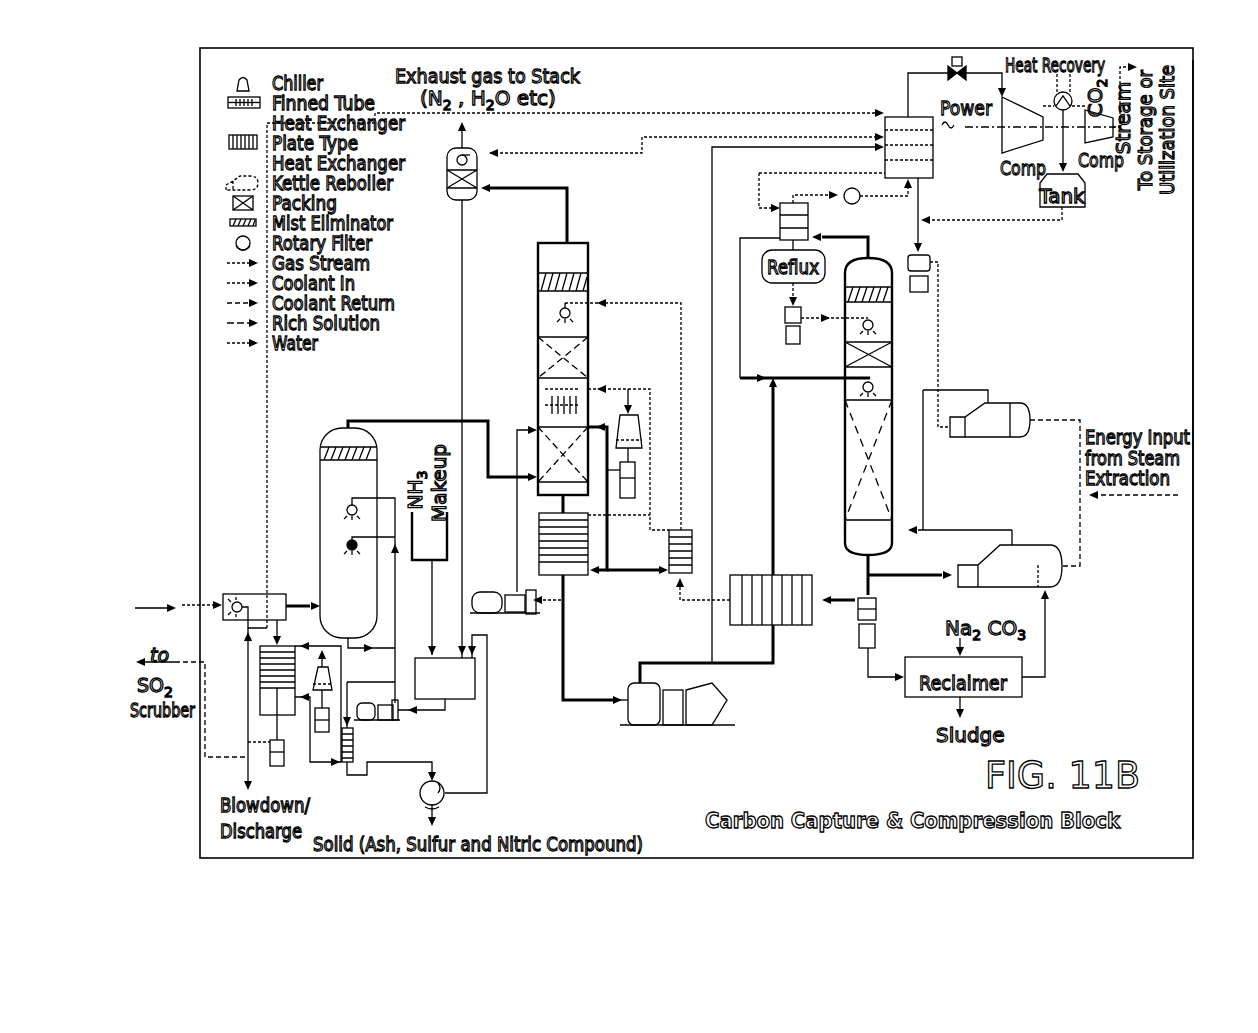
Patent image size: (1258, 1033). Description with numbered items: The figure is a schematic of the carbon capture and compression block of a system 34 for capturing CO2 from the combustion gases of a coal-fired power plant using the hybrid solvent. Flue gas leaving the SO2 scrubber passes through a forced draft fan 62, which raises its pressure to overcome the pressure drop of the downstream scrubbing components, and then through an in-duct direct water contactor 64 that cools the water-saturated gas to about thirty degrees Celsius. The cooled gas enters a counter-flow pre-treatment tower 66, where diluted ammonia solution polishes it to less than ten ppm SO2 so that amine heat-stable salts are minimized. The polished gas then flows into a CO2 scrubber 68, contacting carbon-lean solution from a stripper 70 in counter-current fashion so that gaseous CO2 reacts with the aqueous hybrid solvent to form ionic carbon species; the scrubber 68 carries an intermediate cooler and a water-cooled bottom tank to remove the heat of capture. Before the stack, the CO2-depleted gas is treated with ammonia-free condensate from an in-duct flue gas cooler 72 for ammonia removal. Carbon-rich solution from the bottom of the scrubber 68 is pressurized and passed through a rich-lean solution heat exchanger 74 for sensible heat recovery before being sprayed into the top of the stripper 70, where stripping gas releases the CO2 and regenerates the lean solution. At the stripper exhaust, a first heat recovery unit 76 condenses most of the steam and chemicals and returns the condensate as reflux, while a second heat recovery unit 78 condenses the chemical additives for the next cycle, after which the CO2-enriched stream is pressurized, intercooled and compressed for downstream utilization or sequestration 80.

The system 34 is at (200, 148).
The forced draft fan 62 is at (177, 608).
The in-duct direct water contactor 64 is at (284, 593).
The pre-treatment tower 66 is at (325, 470).
The CO2 scrubber 68 is at (583, 243).
The stripper 70 is at (893, 330).
The in-duct flue gas cooler 72 is at (447, 197).
The rich-lean solution heat exchanger 74 is at (790, 627).
The first heat recovery unit 76 is at (810, 222).
The second heat recovery unit 78 is at (890, 115).
The downstream utilization or sequestration 80 is at (1204, 155).